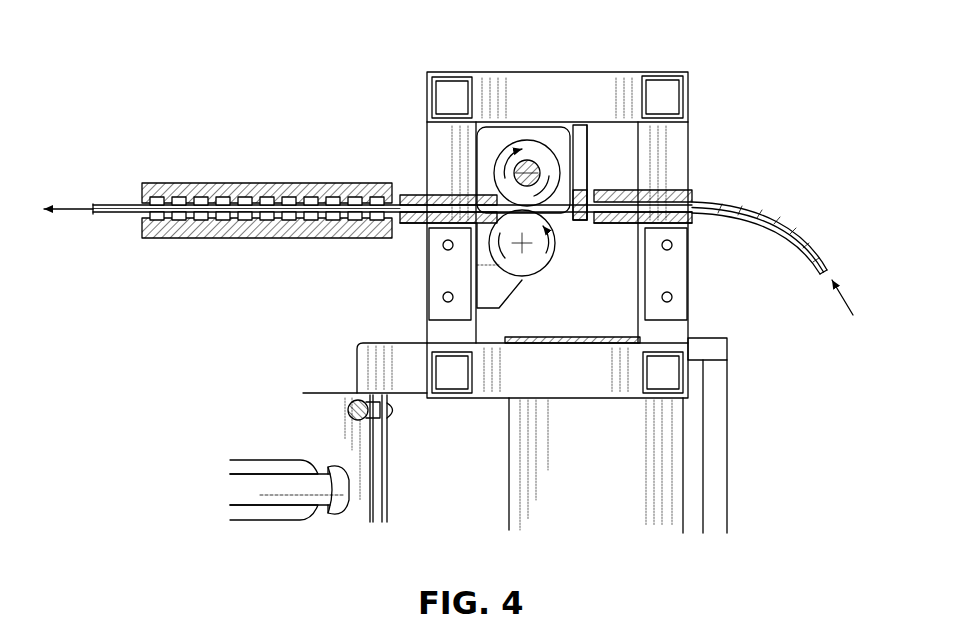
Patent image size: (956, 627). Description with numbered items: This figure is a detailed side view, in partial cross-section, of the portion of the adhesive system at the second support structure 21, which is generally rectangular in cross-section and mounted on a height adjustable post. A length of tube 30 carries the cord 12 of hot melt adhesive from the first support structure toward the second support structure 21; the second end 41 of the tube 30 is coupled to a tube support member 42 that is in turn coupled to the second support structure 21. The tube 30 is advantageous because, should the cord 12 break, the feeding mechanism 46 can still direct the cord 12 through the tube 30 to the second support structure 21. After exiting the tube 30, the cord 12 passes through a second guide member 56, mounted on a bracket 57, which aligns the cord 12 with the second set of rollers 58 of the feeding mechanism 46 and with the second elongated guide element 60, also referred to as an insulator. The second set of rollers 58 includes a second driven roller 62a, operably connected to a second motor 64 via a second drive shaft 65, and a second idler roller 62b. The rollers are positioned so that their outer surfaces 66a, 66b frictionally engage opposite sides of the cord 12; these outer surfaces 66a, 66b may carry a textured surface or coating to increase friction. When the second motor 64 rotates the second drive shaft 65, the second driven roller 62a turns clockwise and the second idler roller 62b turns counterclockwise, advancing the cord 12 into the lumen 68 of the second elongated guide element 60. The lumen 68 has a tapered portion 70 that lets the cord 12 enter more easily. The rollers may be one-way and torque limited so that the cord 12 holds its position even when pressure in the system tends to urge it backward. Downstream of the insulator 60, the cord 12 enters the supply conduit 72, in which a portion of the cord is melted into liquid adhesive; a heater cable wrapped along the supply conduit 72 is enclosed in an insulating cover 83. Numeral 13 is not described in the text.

The cord 12 is at (118, 214).
The wire end 13 is at (826, 265).
The second support structure 21 is at (704, 76).
The tube 30 is at (781, 226).
The second end 41 is at (612, 190).
The tube support member 42 is at (653, 189).
The feeding mechanism 46 is at (546, 292).
The second guide member 56 is at (588, 222).
The bracket 57 is at (581, 136).
The second set of rollers 58 is at (553, 138).
The second elongated guide element 60 is at (410, 225).
The second driven roller 62a is at (509, 157).
The second idler roller 62b is at (500, 258).
The second motor 64 is at (492, 160).
The second drive shaft 65 is at (538, 168).
The outer surface 66a is at (531, 142).
The outer surface 66b is at (553, 262).
The lumen 68 is at (447, 195).
The tapered portion 70 is at (476, 232).
The supply conduit 72 is at (118, 204).
The insulating cover 83 is at (228, 238).